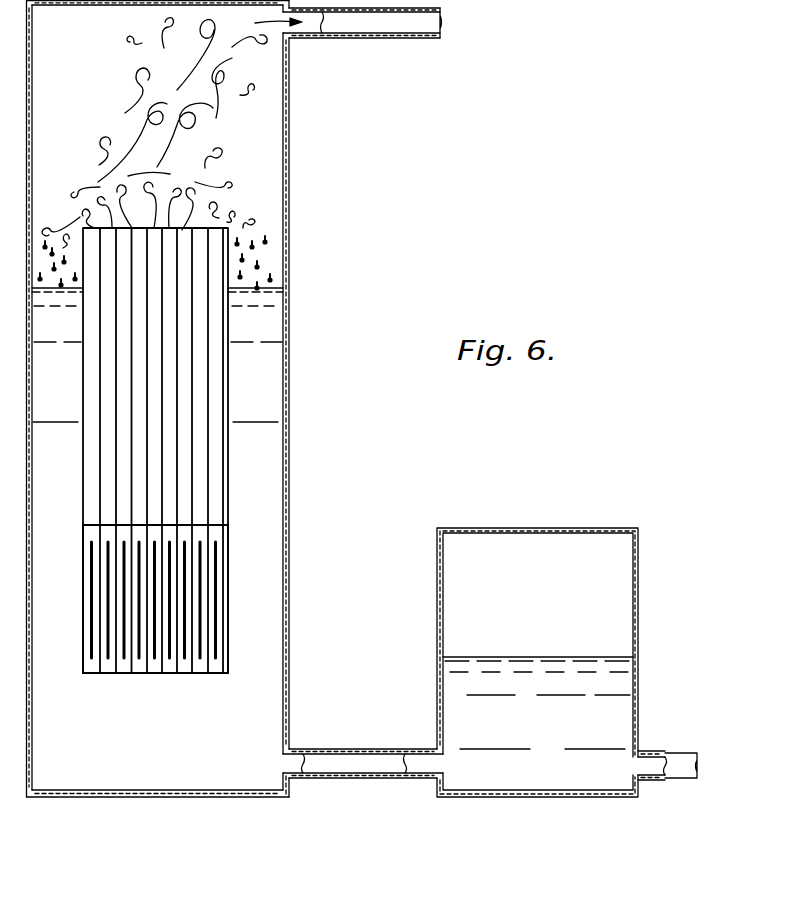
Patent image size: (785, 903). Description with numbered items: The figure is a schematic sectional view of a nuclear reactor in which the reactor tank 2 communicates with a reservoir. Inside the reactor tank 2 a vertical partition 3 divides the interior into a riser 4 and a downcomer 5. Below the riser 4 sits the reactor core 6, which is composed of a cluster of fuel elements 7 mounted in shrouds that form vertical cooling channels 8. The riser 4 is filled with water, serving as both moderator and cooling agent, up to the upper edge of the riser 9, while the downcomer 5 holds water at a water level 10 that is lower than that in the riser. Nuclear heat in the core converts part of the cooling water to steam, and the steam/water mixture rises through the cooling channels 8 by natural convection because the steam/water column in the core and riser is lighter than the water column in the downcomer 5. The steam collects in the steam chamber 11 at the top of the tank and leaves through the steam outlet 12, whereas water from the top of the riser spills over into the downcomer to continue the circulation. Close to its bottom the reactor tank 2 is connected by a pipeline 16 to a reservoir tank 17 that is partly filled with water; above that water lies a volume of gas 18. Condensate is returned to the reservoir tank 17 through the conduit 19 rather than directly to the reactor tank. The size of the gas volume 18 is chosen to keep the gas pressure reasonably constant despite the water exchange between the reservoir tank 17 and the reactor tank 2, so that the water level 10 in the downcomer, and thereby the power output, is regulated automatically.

The reactor tank 2 is at (289, 463).
The vertical partition 3 is at (217, 464).
The riser 4 is at (160, 365).
The downcomer 5 is at (258, 408).
The reactor core 6 is at (160, 607).
The fuel elements 7 is at (222, 628).
The cooling channels 8 is at (220, 672).
The upper edge of the riser 9 is at (200, 228).
The water level in the downcomer 10 is at (273, 288).
The steam chamber 11 is at (264, 132).
The steam outlet 12 is at (385, 40).
The pipeline 16 is at (352, 748).
The reservoir tank 17 is at (437, 652).
The volume of gas 18 is at (458, 545).
The conduit 19 is at (680, 752).